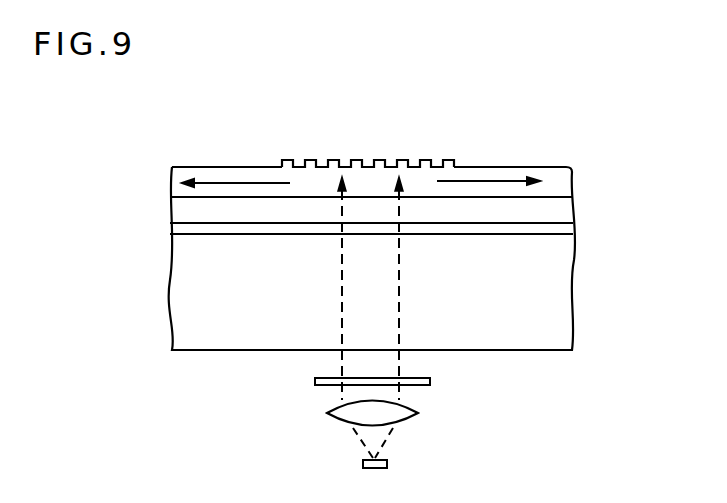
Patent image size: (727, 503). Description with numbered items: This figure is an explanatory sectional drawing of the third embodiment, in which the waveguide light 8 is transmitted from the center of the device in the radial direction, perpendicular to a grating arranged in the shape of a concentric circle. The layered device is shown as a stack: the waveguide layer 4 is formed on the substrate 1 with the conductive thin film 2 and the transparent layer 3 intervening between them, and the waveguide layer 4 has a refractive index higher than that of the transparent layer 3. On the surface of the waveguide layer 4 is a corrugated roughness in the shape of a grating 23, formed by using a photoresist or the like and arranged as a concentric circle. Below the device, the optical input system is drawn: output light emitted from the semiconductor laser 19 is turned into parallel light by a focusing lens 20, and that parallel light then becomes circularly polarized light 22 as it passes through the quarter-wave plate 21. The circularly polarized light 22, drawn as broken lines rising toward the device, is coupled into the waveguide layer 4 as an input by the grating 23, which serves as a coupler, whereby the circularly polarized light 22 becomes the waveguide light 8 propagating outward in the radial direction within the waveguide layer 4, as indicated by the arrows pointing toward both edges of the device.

The substrate 1 is at (558, 293).
The conductive thin film 2 is at (567, 230).
The transparent layer 3 is at (565, 205).
The waveguide layer 4 is at (567, 180).
The waveguide light 8 is at (505, 178).
The semiconductor laser 19 is at (387, 462).
The lens 20 is at (418, 410).
The quarter-wave plate 21 is at (432, 382).
The circularly polarized light 22 is at (403, 303).
The grating 23 is at (451, 160).